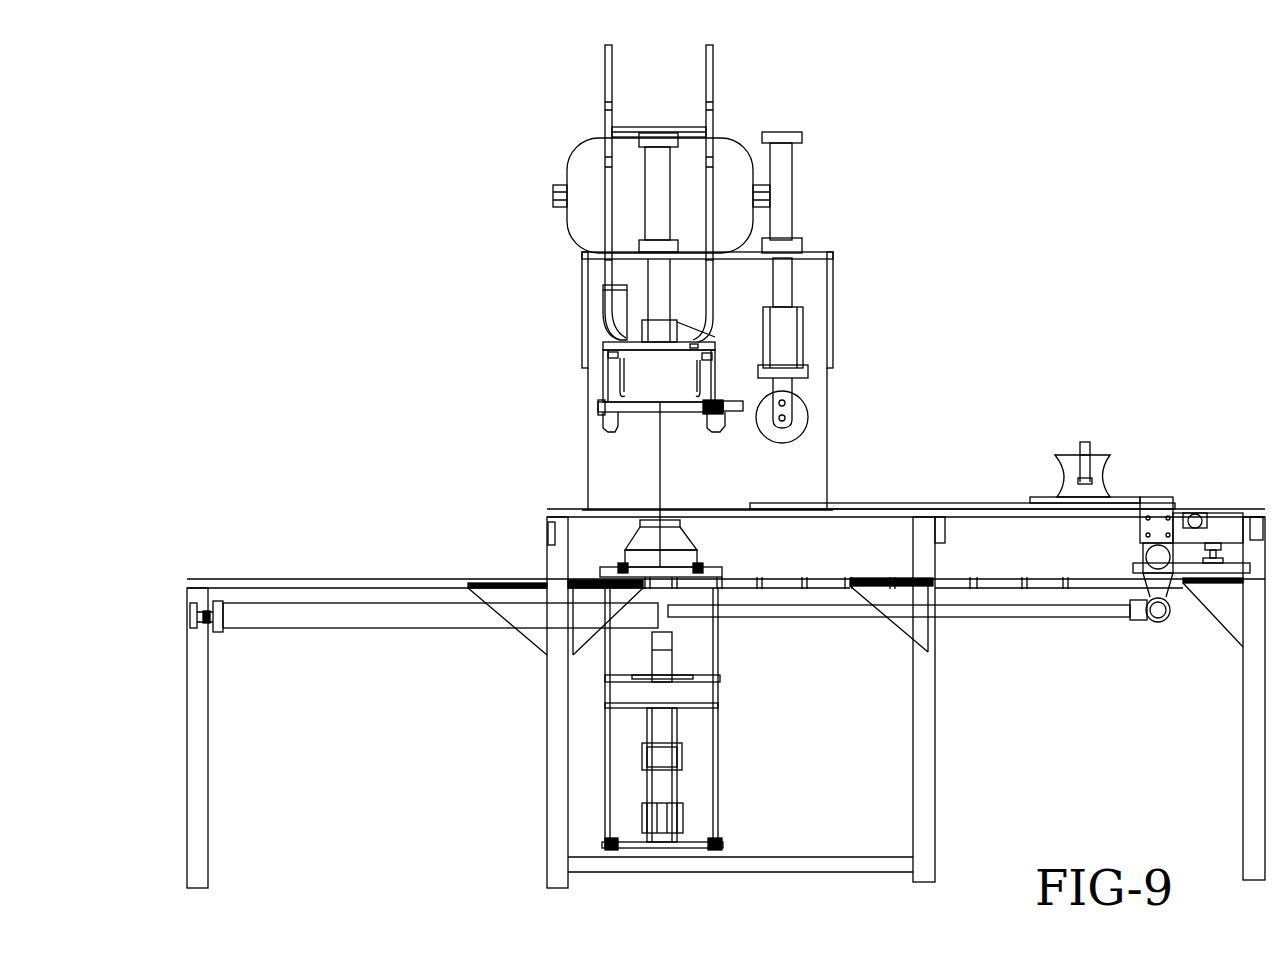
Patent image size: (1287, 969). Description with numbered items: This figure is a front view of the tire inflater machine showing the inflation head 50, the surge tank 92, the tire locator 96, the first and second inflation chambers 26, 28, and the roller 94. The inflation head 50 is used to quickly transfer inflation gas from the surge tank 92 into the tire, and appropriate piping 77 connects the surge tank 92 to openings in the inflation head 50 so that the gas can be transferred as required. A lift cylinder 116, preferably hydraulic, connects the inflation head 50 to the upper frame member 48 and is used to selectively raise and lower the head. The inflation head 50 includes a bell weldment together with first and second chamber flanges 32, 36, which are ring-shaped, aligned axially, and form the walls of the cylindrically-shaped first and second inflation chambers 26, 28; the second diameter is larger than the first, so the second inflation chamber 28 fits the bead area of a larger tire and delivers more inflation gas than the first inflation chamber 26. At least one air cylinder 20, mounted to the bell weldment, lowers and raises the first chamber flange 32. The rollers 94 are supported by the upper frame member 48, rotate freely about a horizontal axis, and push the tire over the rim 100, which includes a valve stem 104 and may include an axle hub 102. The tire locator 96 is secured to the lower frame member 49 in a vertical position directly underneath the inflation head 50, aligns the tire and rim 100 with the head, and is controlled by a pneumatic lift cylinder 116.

The piping 77 is at (713, 98).
The surge tank 92 is at (720, 145).
The lift cylinder 116 is at (655, 198).
The inflation head 50 is at (732, 332).
The air cylinder 20 is at (620, 307).
The upper frame member 48 is at (833, 297).
The first inflation chamber 26 is at (725, 357).
The first chamber flange 32 is at (620, 358).
The second inflation chamber 28 is at (727, 417).
The second chamber flange 36 is at (612, 427).
The roller 94 is at (797, 412).
The lower frame member 49 is at (927, 777).
The tire locator 96 is at (662, 660).
The axle hub 102 is at (1088, 443).
The rim 100 is at (1110, 458).
The valve stem 104 is at (1105, 488).